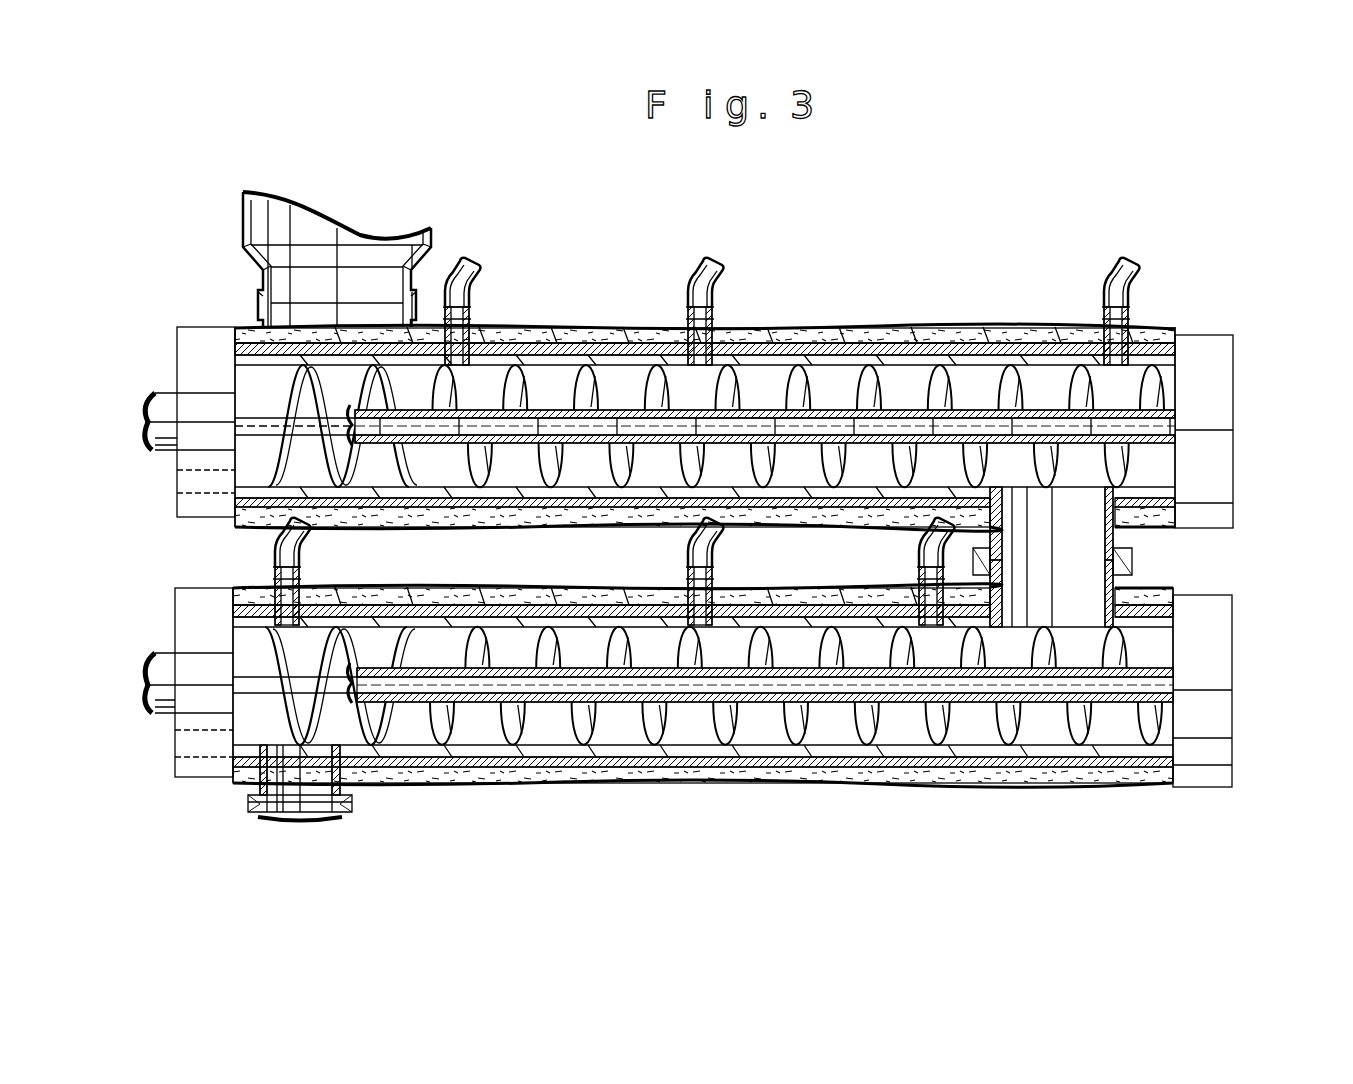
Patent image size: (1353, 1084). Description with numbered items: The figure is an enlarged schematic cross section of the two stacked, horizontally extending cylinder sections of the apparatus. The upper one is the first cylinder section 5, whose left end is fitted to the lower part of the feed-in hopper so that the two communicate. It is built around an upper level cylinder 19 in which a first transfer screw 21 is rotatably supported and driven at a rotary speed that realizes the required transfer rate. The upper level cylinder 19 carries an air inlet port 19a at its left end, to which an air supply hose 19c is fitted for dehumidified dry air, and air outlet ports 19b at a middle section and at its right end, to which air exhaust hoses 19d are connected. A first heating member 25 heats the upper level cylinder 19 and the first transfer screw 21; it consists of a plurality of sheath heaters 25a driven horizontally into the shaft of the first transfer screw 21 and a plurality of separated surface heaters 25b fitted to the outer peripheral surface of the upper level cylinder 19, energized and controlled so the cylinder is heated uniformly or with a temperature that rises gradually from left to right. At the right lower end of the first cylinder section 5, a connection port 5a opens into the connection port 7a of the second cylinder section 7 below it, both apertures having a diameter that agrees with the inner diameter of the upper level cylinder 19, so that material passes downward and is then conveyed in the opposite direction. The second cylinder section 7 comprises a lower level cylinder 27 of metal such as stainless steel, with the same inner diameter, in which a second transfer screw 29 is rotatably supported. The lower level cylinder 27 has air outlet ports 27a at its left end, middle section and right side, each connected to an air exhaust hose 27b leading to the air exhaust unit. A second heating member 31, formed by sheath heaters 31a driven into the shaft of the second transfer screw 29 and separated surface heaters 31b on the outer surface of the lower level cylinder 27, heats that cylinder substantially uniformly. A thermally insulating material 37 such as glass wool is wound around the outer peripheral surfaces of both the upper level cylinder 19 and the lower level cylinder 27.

The first cylinder section 5 is at (968, 318).
The connection port 5a is at (1060, 530).
The second cylinder section 7 is at (958, 795).
The connection port 7a is at (1063, 595).
The upper level cylinder 19 is at (528, 276).
The air inlet port 19a is at (463, 340).
The air outlet port 19b is at (697, 348).
The air supply hose 19c is at (473, 263).
The air exhaust hose 19d is at (709, 280).
The first transfer screw 21 is at (283, 420).
The first heating member 25 is at (721, 340).
The sheath heater 25a is at (812, 426).
The surface heater 25b is at (943, 350).
The lower level cylinder 27 is at (463, 783).
The air outlet port 27a is at (287, 600).
The air exhaust hose 27b is at (293, 548).
The second transfer screw 29 is at (287, 687).
The second heating member 31 is at (703, 769).
The sheath heater 31a is at (577, 690).
The surface heater 31b is at (678, 745).
The thermally insulating material 37 is at (625, 340).